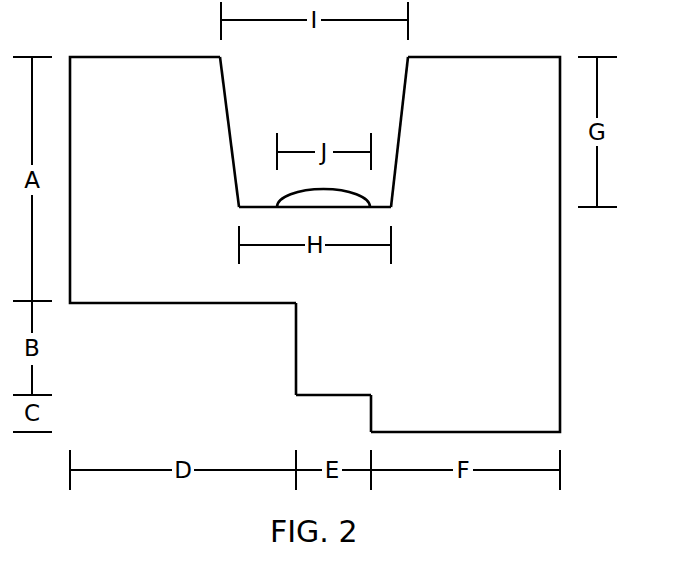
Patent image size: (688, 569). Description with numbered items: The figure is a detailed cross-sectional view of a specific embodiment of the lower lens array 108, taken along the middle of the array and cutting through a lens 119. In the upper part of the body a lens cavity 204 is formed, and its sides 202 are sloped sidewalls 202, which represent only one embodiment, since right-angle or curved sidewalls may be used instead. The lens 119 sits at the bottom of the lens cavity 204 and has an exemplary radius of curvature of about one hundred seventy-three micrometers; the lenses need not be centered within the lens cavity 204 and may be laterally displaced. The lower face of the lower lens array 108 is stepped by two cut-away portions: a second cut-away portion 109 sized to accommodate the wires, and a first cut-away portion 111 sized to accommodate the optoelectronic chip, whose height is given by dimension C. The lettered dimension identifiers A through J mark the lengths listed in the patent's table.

The lower lens array 108 is at (473, 312).
The lens cavity 204 is at (262, 103).
The sloped sidewalls 202 is at (400, 130).
The lens 119 is at (366, 198).
The second cut-away portion 109 is at (280, 348).
The first cut-away portion 111 is at (355, 403).